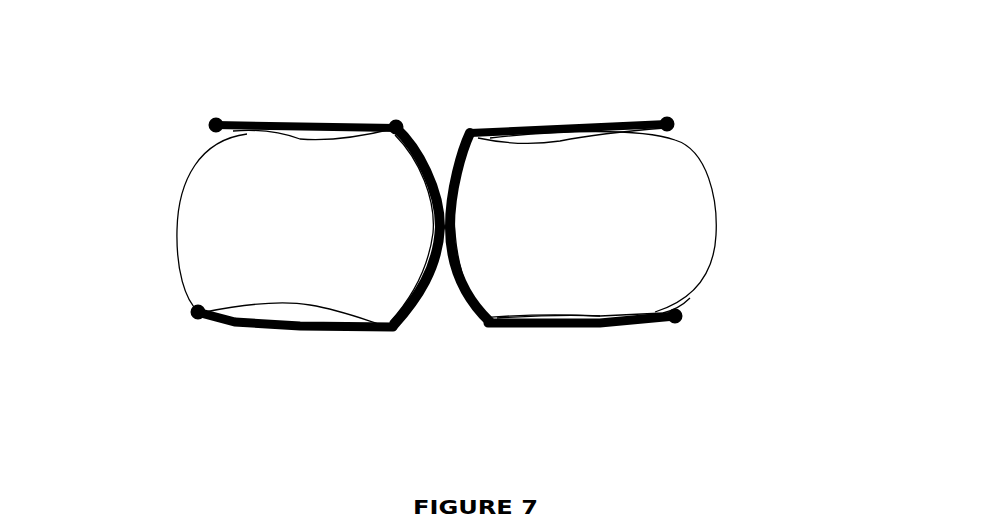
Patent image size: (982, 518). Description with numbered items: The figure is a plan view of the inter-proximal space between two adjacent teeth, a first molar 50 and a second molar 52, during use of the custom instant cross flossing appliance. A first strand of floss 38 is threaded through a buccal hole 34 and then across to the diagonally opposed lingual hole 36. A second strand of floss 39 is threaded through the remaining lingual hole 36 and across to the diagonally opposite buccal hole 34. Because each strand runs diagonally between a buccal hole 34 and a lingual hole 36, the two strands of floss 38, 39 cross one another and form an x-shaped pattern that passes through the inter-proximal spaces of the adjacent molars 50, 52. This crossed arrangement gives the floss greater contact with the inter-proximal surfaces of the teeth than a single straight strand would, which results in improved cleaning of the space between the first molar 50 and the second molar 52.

The buccal hole 34 is at (470, 133).
The lingual hole 36 is at (383, 332).
The first strand of floss 38 is at (275, 117).
The second strand of floss 39 is at (587, 122).
The first molar 50 is at (297, 230).
The second molar 52 is at (578, 227).